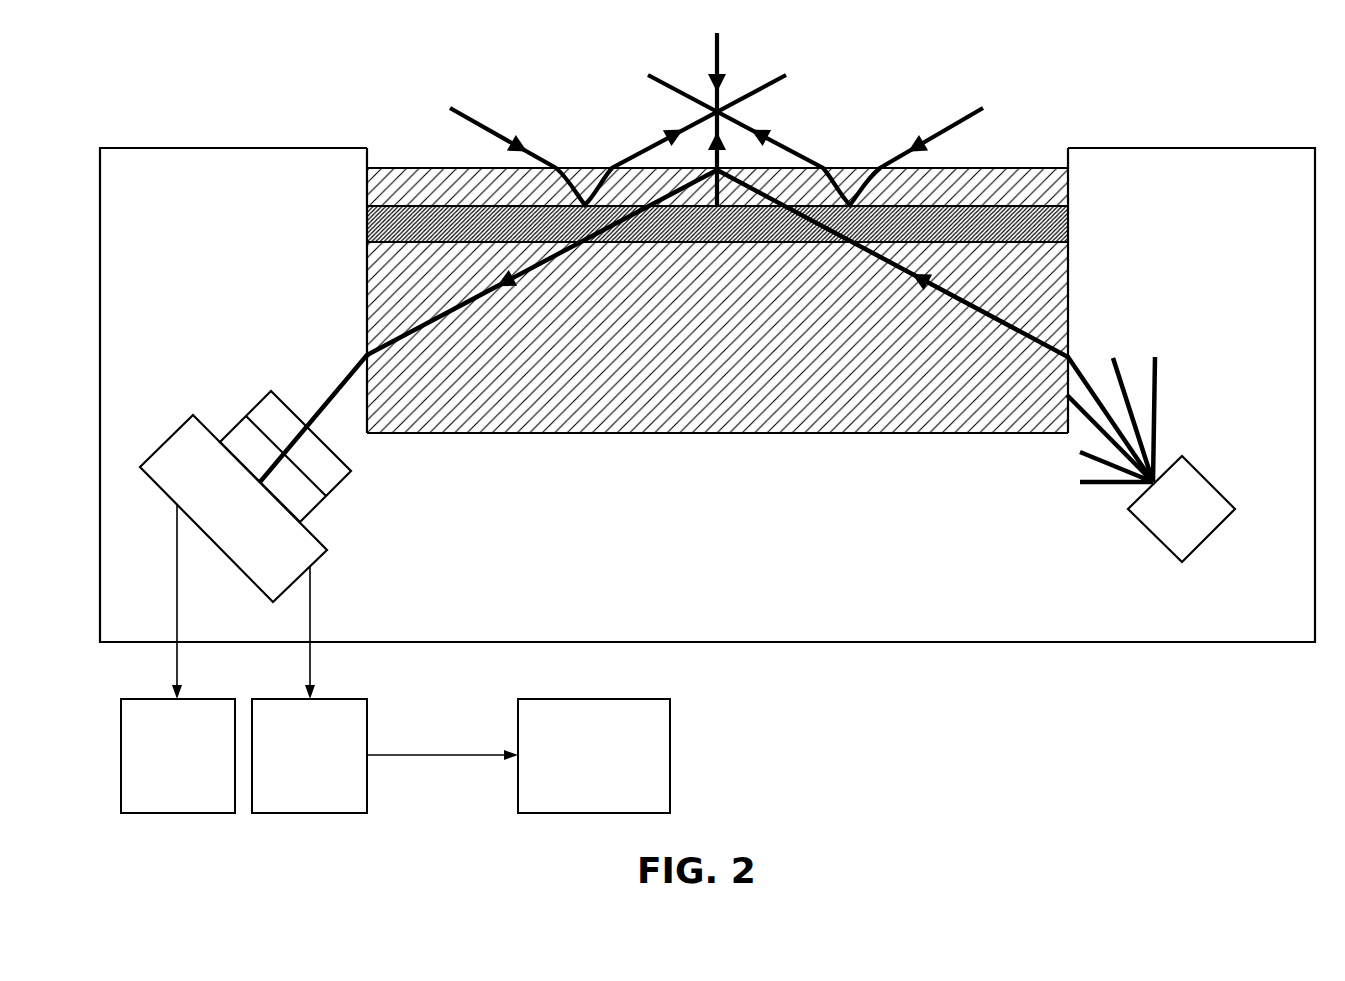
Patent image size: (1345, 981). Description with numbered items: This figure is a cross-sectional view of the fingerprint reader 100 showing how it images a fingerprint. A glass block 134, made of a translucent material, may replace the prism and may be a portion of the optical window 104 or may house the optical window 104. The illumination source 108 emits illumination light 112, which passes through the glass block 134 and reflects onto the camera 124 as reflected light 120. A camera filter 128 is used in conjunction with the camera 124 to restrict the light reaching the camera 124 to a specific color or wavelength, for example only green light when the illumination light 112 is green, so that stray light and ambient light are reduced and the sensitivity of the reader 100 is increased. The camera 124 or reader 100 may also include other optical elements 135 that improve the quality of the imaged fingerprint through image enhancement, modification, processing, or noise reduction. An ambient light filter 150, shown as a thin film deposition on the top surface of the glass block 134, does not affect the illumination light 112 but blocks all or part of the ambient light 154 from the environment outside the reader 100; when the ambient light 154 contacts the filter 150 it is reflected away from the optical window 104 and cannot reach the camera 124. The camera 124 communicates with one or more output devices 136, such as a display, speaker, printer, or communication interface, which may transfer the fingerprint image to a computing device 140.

The fingerprint reader 100 is at (1207, 128).
The optical window 104 is at (392, 167).
The illumination source 108 is at (1150, 537).
The illumination light 112 is at (1073, 367).
The reflected light 120 is at (343, 387).
The camera 124 is at (233, 508).
The camera filter 128 is at (347, 477).
The glass block 134 is at (775, 435).
The other optical elements 135 is at (222, 440).
The output device 136 is at (244, 659).
The computing device 140 is at (518, 756).
The ambient light filter 150 is at (1068, 222).
The ambient light 154 is at (720, 45).